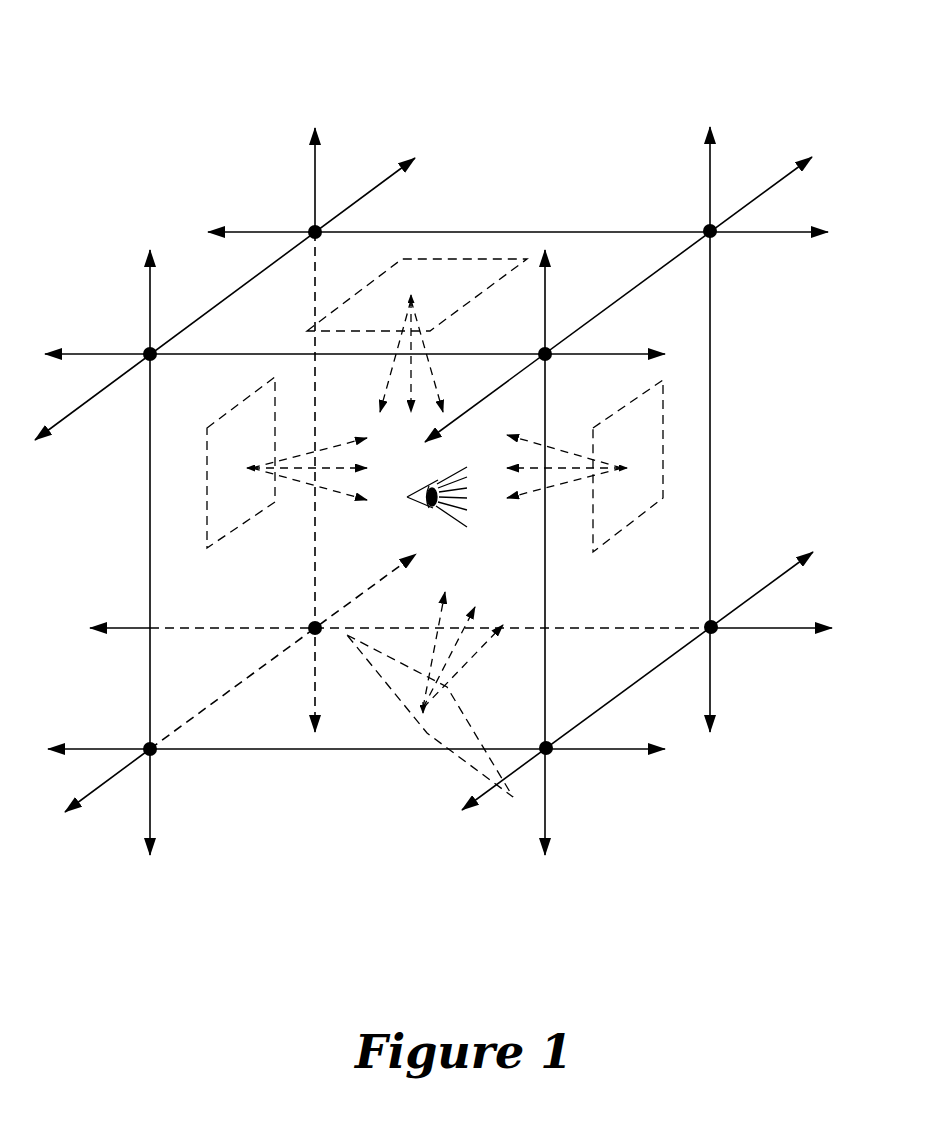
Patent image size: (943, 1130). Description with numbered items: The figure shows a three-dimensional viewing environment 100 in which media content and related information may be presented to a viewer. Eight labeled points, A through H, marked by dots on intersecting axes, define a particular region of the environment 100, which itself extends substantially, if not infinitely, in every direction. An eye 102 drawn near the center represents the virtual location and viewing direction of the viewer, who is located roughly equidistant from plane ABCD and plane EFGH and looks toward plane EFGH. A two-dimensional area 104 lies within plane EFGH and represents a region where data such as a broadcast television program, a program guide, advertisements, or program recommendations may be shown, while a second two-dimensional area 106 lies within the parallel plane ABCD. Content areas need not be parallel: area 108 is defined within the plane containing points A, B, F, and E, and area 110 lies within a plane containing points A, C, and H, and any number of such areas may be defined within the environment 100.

The three-dimensional viewing environment 100 is at (680, 85).
The eye 102 is at (432, 507).
The two-dimensional area 104 is at (662, 428).
The two-dimensional area 106 is at (213, 545).
The two-dimensional area 108 is at (360, 322).
The two-dimensional area 110 is at (427, 733).